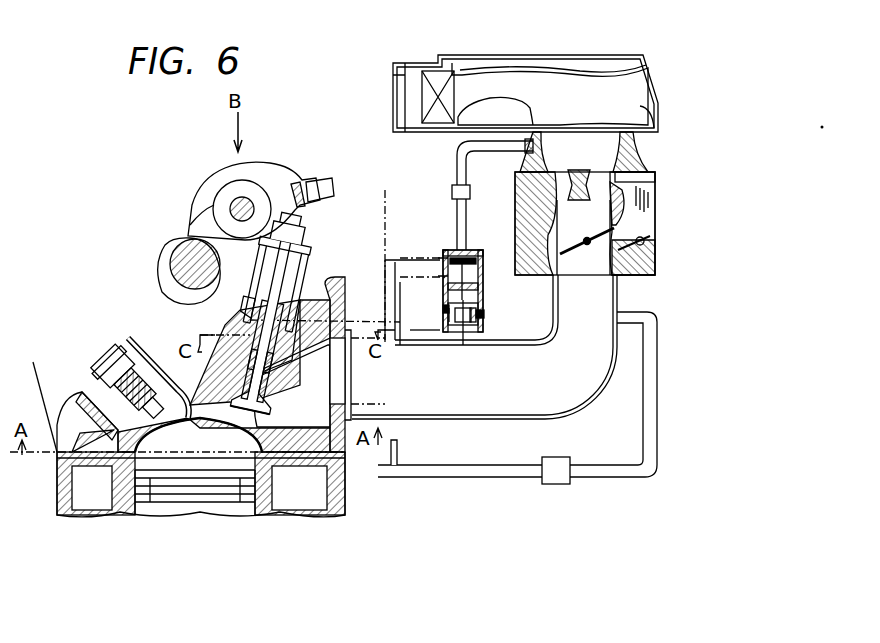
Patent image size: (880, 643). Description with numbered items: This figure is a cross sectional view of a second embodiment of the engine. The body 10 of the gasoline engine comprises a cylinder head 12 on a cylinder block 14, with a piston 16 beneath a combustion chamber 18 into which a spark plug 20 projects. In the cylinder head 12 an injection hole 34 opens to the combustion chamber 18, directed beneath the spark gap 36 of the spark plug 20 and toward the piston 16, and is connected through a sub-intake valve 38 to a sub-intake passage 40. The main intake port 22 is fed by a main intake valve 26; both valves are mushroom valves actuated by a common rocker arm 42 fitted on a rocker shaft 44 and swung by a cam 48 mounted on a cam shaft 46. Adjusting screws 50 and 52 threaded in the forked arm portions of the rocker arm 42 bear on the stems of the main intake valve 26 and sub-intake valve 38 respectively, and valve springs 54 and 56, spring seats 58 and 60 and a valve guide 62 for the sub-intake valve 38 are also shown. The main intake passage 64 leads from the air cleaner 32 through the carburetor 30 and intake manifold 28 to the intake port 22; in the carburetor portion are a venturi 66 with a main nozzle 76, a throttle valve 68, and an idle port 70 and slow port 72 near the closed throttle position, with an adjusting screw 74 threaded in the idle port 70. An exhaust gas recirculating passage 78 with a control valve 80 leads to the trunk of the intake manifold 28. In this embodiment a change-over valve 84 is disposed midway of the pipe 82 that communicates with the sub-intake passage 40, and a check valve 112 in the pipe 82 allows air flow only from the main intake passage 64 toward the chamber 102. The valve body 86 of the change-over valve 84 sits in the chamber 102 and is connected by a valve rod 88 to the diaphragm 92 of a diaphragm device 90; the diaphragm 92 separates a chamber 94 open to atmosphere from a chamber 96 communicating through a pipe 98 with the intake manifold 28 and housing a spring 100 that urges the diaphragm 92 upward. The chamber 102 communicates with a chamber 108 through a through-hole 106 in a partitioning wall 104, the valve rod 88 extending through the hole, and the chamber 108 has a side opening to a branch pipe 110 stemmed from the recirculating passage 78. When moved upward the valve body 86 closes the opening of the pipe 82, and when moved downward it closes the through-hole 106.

The body 10 is at (120, 338).
The cylinder head 12 is at (346, 460).
The cylinder block 14 is at (340, 514).
The piston 16 is at (240, 475).
The combustion chamber 18 is at (190, 462).
The spark plug 20 is at (105, 385).
The main intake port 22 is at (350, 392).
The main intake valve 26 is at (347, 293).
The intake manifold 28 is at (575, 408).
The carburetor 30 is at (656, 270).
The air cleaner 32 is at (552, 56).
The injection hole 34 is at (232, 385).
The spark gap 36 is at (165, 432).
The sub-intake valve 38 is at (240, 326).
The sub-intake passage 40 is at (290, 363).
The rocker arm 42 is at (235, 162).
The rocker shaft 44 is at (232, 205).
The cam shaft 46 is at (170, 252).
The cam 48 is at (163, 274).
The adjusting screw 50 is at (322, 180).
The adjusting screw 52 is at (298, 184).
The valve spring 54 is at (327, 262).
The valve spring 56 is at (268, 245).
The spring seat 58 is at (322, 242).
The spring seat 60 is at (320, 210).
The valve guide 62 is at (255, 285).
The main intake passage 64 is at (596, 322).
The venturi 66 is at (578, 175).
The throttle valve 68 is at (566, 240).
The idle port 70 is at (614, 246).
The slow port 72 is at (608, 236).
The adjusting screw 74 is at (650, 240).
The main nozzle 76 is at (652, 182).
The exhaust gas recirculating passage 78 is at (600, 478).
The control valve 80 is at (548, 484).
The pipe 82 is at (385, 190).
The change-over valve 84 is at (440, 258).
The valve body 86 is at (476, 250).
The valve rod 88 is at (480, 300).
The diaphragm device 90 is at (496, 326).
The diaphragm 92 is at (465, 335).
The chamber 94 is at (444, 305).
The chamber 96 is at (478, 332).
The pipe 98 is at (455, 336).
The spring 100 is at (455, 316).
The chamber 102 is at (455, 262).
The partitioning wall 104 is at (446, 270).
The through-hole 106 is at (480, 286).
The chamber 108 is at (436, 340).
The branch pipe 110 is at (398, 447).
The check valve 112 is at (452, 196).